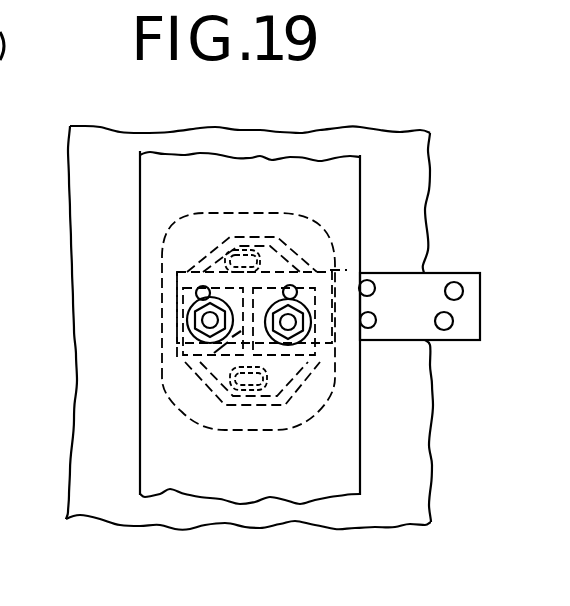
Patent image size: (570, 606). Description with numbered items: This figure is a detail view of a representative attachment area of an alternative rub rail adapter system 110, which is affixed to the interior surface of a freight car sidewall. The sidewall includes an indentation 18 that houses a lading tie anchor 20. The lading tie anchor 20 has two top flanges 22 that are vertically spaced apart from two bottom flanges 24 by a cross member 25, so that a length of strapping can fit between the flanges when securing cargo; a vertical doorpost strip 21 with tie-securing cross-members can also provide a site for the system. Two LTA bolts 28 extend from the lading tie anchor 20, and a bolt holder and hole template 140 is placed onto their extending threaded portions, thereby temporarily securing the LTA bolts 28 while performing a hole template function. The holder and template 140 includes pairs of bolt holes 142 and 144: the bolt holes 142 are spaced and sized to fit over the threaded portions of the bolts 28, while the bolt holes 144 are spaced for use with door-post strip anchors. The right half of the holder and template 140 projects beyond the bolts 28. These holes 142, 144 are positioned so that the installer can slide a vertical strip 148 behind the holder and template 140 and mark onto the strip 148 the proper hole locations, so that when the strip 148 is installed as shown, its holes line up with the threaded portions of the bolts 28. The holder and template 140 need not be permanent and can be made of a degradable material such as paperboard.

The rub rail adapter system 110 is at (388, 170).
The vertical strip 148 is at (158, 178).
The indentation 18 is at (173, 250).
The top flange 22 is at (292, 258).
The LTA bolt 28 is at (288, 322).
The cross member 25 is at (222, 372).
The bottom flange 24 is at (198, 410).
The lading tie anchor 20 is at (302, 400).
The vertical doorpost strip 21 is at (103, 271).
The bolt holder and hole template 140 is at (462, 341).
The bolt hole 144 is at (454, 282).
The bolt hole 142 is at (453, 316).